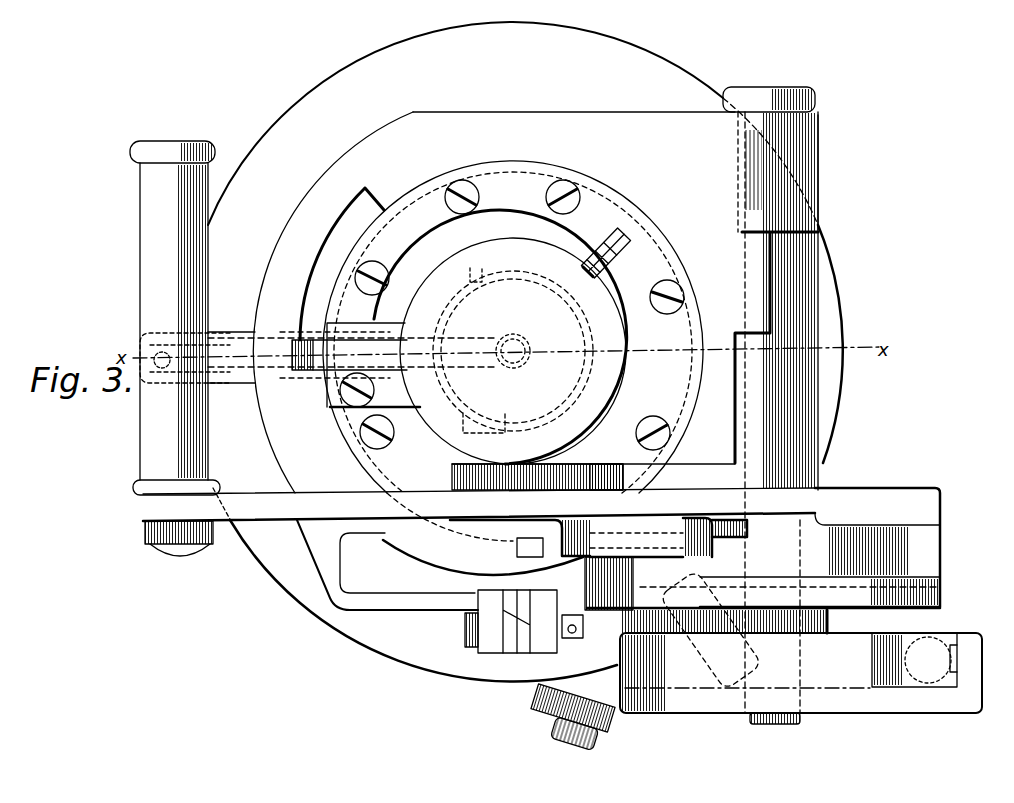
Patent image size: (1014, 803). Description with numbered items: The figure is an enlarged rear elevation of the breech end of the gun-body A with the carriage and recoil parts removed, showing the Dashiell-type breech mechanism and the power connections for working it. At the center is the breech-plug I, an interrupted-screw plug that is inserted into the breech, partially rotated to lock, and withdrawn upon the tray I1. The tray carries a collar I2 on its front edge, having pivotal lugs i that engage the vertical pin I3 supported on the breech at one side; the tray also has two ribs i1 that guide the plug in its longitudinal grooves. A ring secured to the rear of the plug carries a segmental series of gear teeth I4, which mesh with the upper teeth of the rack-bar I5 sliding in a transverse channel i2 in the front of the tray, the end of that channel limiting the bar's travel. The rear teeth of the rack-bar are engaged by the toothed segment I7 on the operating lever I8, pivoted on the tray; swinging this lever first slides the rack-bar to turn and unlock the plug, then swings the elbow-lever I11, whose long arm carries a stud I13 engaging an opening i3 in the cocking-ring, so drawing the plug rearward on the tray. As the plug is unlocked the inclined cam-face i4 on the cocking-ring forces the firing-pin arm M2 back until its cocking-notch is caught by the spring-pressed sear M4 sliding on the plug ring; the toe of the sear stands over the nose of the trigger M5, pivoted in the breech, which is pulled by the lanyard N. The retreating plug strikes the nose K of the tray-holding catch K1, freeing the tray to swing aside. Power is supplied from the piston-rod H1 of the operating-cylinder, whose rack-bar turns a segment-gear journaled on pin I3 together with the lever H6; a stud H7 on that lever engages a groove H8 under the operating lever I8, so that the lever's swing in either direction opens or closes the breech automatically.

The gun-body A is at (431, 692).
The breech-plug I is at (500, 337).
The tray I1 is at (412, 612).
The collar I2 is at (730, 440).
The vertical pin I3 is at (770, 95).
The gear teeth I4 is at (510, 522).
The rack-bar I5 is at (517, 549).
The toothed segment I7 is at (925, 553).
The operating lever I8 is at (242, 510).
The elbow-lever I11 is at (620, 465).
The stud I13 is at (588, 262).
The pivotal lugs i is at (820, 192).
The ribs i1 is at (446, 478).
The transverse channel i2 is at (407, 563).
The opening i3 is at (466, 428).
The inclined cam-face i4 is at (446, 298).
The arm M2 is at (486, 338).
The sear M4 is at (353, 350).
The trigger M5 is at (252, 335).
The lanyard N is at (163, 370).
The nose K is at (490, 560).
The tray-holding catch K1 is at (540, 690).
The piston-rod H1 is at (950, 634).
The lever H6 is at (790, 636).
The stud H7 is at (762, 583).
The groove H8 is at (585, 560).